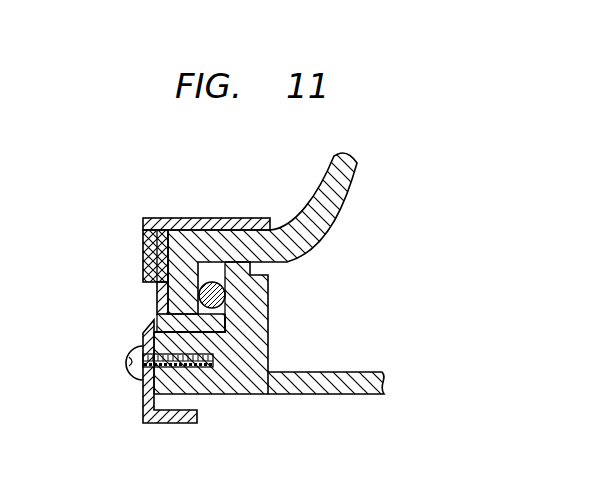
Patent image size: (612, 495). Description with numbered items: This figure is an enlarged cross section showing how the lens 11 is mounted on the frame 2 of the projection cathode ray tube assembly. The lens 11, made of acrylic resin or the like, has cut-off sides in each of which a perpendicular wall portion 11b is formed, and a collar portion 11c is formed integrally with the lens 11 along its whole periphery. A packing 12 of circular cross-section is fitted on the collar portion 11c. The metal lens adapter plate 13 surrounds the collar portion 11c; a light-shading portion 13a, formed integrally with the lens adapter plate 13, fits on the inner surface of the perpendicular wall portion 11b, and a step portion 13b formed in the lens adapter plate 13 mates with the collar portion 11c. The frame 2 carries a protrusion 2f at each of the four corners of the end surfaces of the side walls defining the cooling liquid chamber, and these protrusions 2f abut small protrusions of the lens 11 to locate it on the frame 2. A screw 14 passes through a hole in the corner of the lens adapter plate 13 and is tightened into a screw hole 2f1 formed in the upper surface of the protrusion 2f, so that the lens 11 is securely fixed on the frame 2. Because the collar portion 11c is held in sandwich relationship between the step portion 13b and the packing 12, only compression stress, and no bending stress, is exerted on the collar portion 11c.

The frame 2 is at (241, 355).
The protrusion 2f is at (160, 326).
The screw hole 2f1 is at (192, 374).
The lens 11 is at (253, 233).
The perpendicular wall portion 11b is at (277, 237).
The collar portion 11c is at (157, 282).
The packing 12 is at (226, 290).
The lens adapter plate 13 is at (183, 323).
The light-shading portion 13a is at (222, 222).
The step portion 13b is at (156, 279).
The screw 14 is at (127, 374).